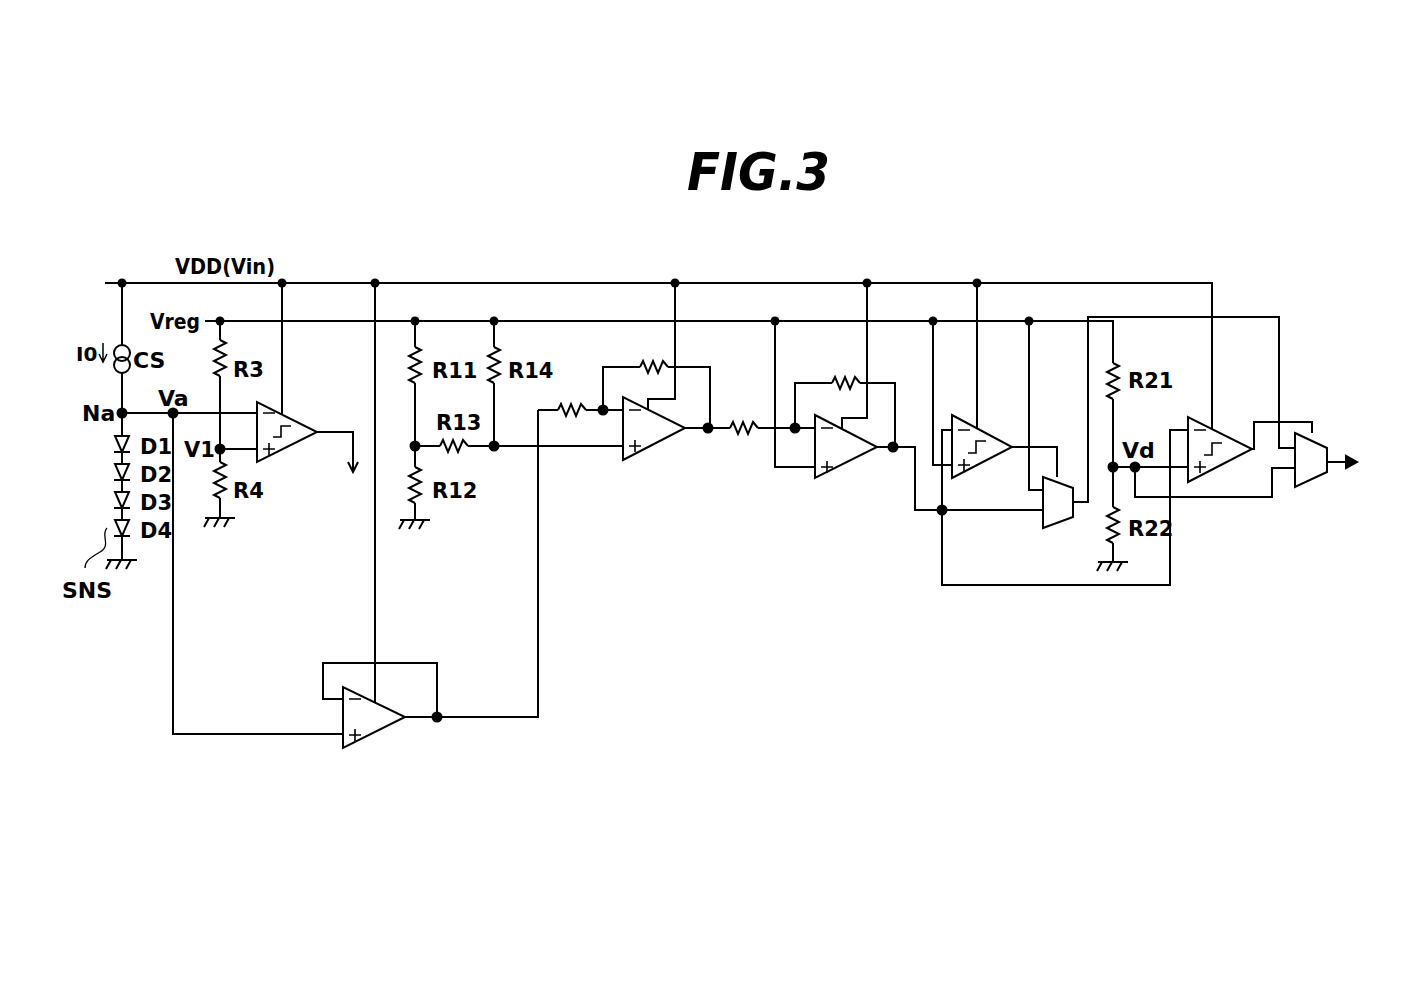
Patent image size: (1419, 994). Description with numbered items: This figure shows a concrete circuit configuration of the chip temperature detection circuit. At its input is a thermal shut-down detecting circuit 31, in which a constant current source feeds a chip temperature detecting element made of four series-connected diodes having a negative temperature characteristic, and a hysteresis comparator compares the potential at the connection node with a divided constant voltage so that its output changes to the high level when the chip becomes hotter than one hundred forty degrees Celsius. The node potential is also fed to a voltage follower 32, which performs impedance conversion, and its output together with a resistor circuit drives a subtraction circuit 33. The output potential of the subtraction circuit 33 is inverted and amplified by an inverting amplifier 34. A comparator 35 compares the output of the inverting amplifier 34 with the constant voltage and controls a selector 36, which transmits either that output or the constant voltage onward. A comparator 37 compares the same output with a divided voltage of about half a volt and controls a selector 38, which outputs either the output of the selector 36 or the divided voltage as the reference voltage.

The thermal shut-down detecting circuit 31 is at (293, 483).
The voltage follower 32 is at (380, 740).
The subtraction circuit 33 is at (633, 475).
The inverting amplifier 34 is at (828, 490).
The comparator 35 is at (975, 473).
The selector 36 is at (1043, 528).
The comparator 37 is at (1218, 432).
The selector 38 is at (1310, 488).